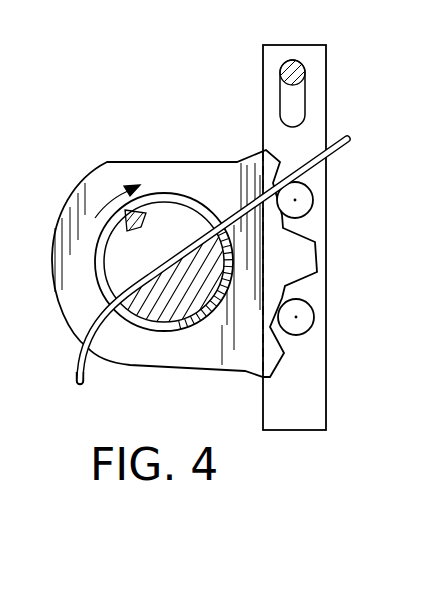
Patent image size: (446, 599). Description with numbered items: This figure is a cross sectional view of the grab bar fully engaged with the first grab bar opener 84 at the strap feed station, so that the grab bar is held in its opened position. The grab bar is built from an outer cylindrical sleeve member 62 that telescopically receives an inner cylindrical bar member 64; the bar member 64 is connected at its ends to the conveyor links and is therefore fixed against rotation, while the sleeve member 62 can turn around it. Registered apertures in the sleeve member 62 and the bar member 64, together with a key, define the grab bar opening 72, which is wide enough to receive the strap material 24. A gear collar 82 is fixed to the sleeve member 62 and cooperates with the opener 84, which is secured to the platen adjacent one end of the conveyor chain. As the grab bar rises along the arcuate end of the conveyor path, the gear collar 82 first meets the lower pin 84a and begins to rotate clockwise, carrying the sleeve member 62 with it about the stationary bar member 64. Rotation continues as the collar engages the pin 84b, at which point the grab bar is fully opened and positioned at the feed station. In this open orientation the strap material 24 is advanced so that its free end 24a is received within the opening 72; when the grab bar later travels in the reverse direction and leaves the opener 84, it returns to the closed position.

The gear collar 82 is at (177, 177).
The grab bar opening 72 is at (190, 230).
The bar member 64 is at (155, 300).
The sleeve member 62 is at (197, 321).
The strap material 24 is at (342, 147).
The free end 24a is at (83, 367).
The grab bar opener 84 is at (317, 112).
The lower pin 84a is at (305, 320).
The pin 84b is at (308, 197).